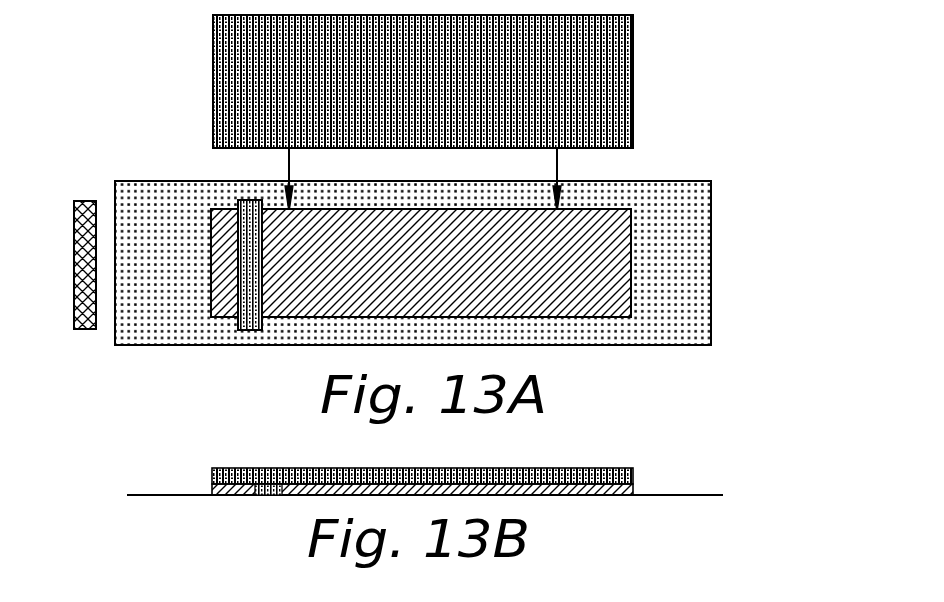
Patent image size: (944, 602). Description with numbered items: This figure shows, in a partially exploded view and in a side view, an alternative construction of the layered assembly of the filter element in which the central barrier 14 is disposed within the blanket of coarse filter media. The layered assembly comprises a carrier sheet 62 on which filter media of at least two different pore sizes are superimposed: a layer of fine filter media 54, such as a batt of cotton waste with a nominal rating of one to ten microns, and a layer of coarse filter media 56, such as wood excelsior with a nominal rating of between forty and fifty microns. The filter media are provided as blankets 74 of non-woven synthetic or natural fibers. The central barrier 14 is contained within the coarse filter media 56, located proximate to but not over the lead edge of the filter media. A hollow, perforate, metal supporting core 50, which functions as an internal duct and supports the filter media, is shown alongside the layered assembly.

In FIG. 13A, the central barrier 14 is at (245, 328).
In FIG. 13B, the central barrier 14 is at (262, 497).
In FIG. 13A, the supporting core 50 is at (90, 332).
In FIG. 13A, the fine filter media 54 is at (490, 81).
In FIG. 13B, the fine filter media 54 is at (632, 468).
In FIG. 13A, the coarse filter media 56 is at (222, 307).
In FIG. 13B, the coarse filter media 56 is at (633, 486).
In FIG. 13A, the carrier sheet 62 is at (692, 230).
In FIG. 13B, the carrier sheet 62 is at (693, 494).
In FIG. 13A, the blanket 74 is at (633, 76).